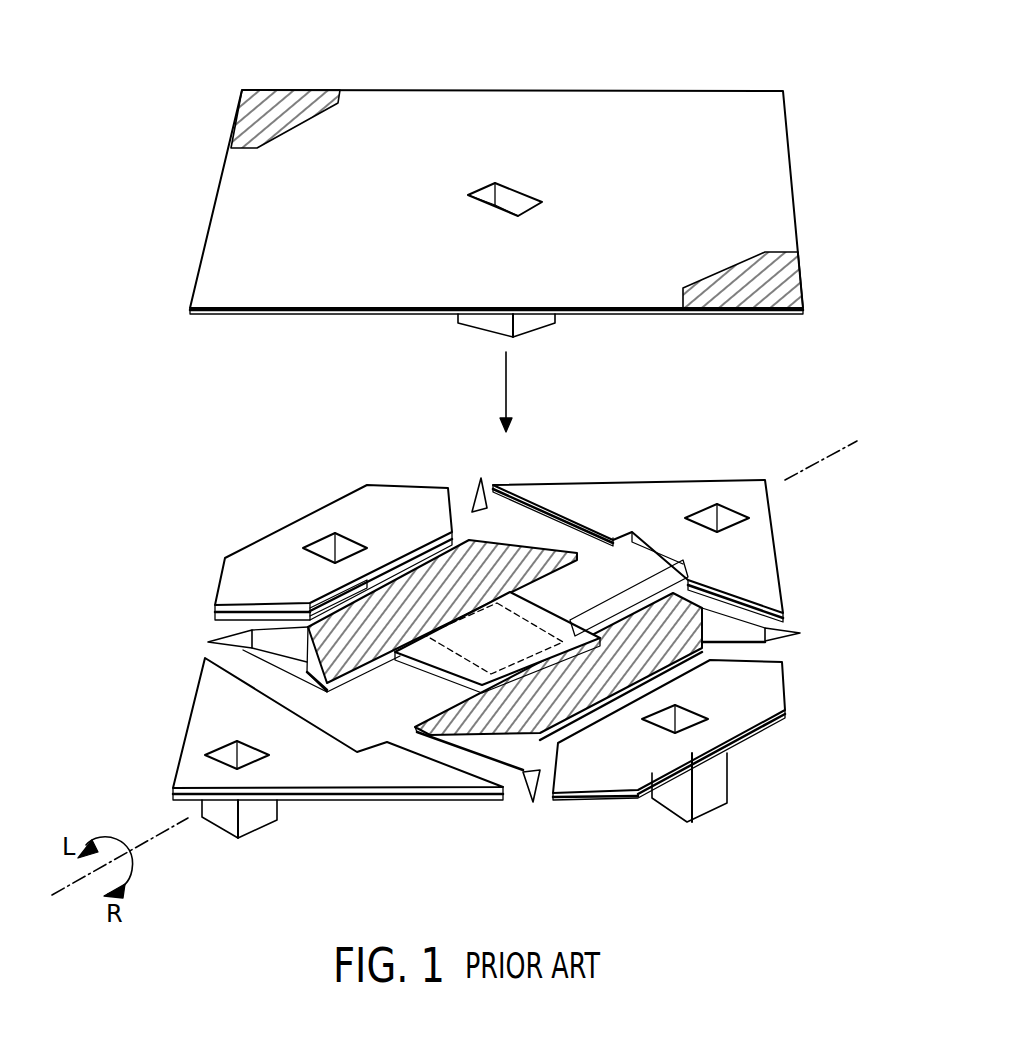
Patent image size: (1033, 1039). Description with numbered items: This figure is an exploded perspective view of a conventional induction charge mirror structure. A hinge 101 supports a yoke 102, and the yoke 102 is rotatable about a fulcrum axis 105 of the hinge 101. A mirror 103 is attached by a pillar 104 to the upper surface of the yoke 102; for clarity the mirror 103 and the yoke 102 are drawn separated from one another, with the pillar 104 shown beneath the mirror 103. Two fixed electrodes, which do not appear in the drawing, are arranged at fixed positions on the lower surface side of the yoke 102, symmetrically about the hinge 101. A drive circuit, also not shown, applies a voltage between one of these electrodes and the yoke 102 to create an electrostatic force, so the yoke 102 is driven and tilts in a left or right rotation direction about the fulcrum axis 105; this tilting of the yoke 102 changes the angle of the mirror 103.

The hinge 101 is at (600, 575).
The yoke 102 is at (433, 578).
The mirror 103 is at (698, 118).
The pillar 104 is at (540, 333).
The fulcrum axis 105 is at (813, 473).